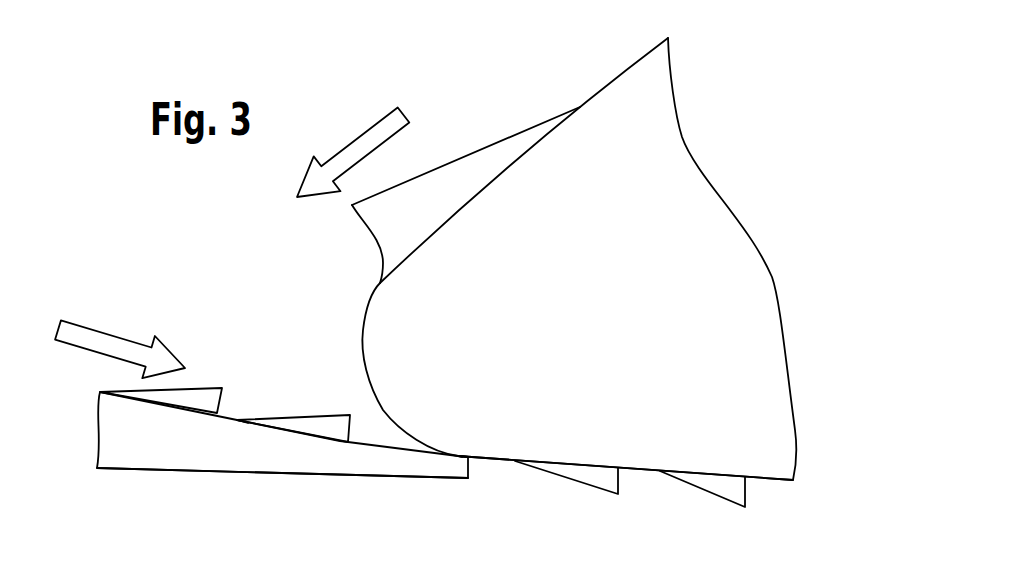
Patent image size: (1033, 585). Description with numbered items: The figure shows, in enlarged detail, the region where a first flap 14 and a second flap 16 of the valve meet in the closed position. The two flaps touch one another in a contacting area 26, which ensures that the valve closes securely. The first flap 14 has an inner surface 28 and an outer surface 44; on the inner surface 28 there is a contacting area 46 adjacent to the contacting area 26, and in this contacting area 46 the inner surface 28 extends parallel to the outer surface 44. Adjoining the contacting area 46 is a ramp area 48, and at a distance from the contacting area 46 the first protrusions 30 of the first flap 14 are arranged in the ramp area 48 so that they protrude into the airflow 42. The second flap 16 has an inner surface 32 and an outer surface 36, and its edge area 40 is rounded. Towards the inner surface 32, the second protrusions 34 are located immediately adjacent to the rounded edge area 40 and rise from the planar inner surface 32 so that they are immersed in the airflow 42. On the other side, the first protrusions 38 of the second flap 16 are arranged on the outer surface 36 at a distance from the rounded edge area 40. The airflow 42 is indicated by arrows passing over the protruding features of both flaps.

The first flap 14 is at (115, 433).
The second flap 16 is at (658, 140).
The contacting area 26 is at (455, 465).
The inner surface 28 is at (247, 412).
The first protrusions 30 is at (209, 397).
The inner surface 32 is at (607, 78).
The second protrusions 34 is at (493, 162).
The outer surface 36 is at (510, 470).
The first protrusions 38 is at (598, 473).
The edge area 40 is at (363, 327).
The airflow 42 is at (97, 338).
The outer surface 44 is at (183, 480).
The contacting area 46 is at (463, 452).
The ramp area 48 is at (243, 430).